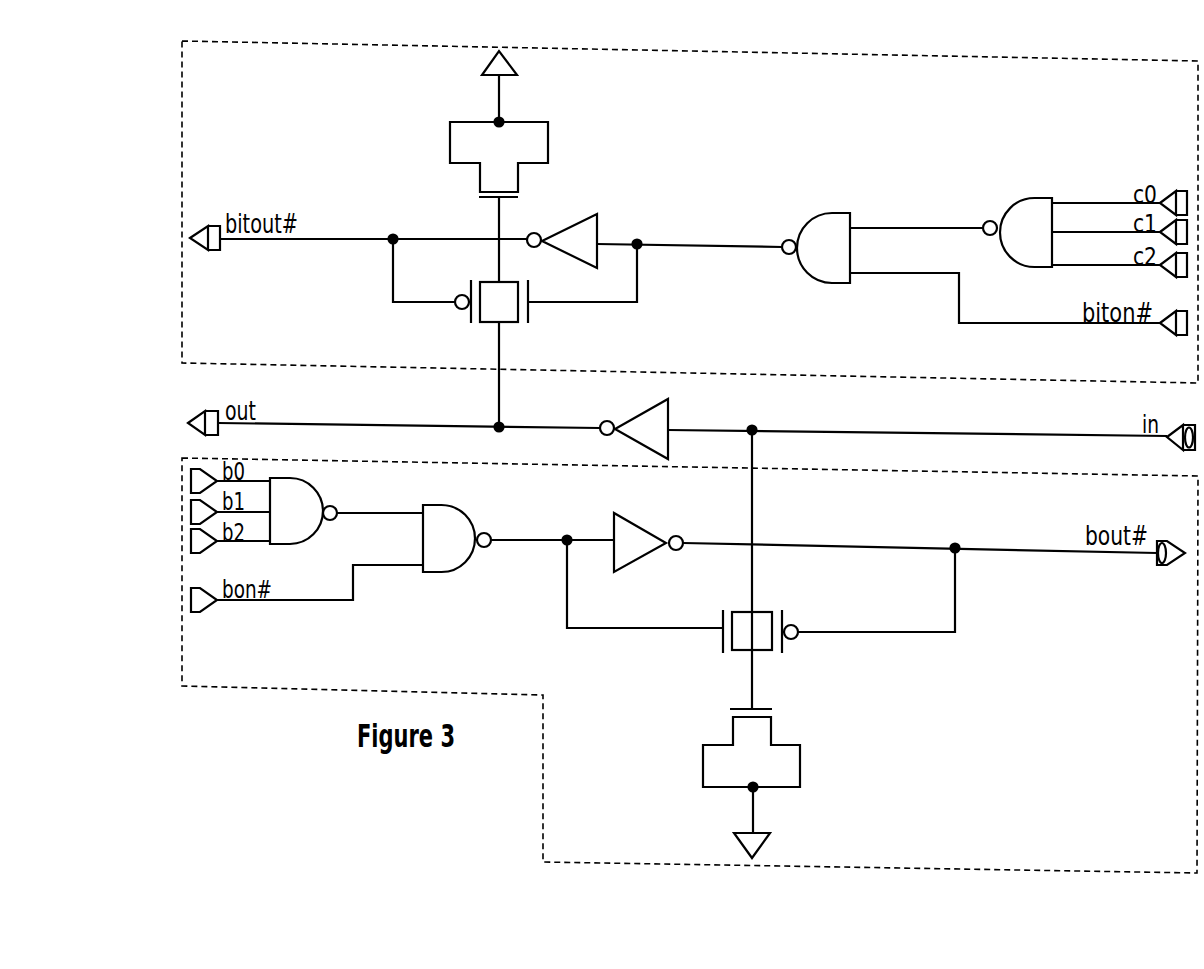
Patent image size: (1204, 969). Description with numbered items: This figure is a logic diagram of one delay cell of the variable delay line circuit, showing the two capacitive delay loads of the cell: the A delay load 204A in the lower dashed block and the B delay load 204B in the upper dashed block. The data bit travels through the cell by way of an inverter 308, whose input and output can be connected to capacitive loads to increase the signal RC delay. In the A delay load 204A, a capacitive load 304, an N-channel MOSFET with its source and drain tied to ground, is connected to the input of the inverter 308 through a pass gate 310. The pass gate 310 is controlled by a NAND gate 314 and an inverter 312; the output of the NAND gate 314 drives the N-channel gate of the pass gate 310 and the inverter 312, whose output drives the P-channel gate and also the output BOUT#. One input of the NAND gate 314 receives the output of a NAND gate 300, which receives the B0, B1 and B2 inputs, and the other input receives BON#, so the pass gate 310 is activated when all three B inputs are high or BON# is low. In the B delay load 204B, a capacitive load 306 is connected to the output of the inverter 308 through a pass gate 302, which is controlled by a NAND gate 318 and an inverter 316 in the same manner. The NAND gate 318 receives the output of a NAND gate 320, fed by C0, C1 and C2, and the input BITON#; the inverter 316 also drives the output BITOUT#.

The NAND gate 300 is at (327, 506).
The pass gate 302 is at (471, 321).
The capacitive load 304 is at (777, 780).
The capacitive load 306 is at (467, 166).
The inverter 308 is at (615, 415).
The pass gate 310 is at (780, 610).
The inverter 312 is at (661, 529).
The NAND gate 314 is at (481, 525).
The inverter 316 is at (597, 226).
The NAND gate 318 is at (850, 227).
The NAND gate 320 is at (1047, 211).
The B delay load 204B is at (690, 212).
The A delay load 204A is at (690, 665).